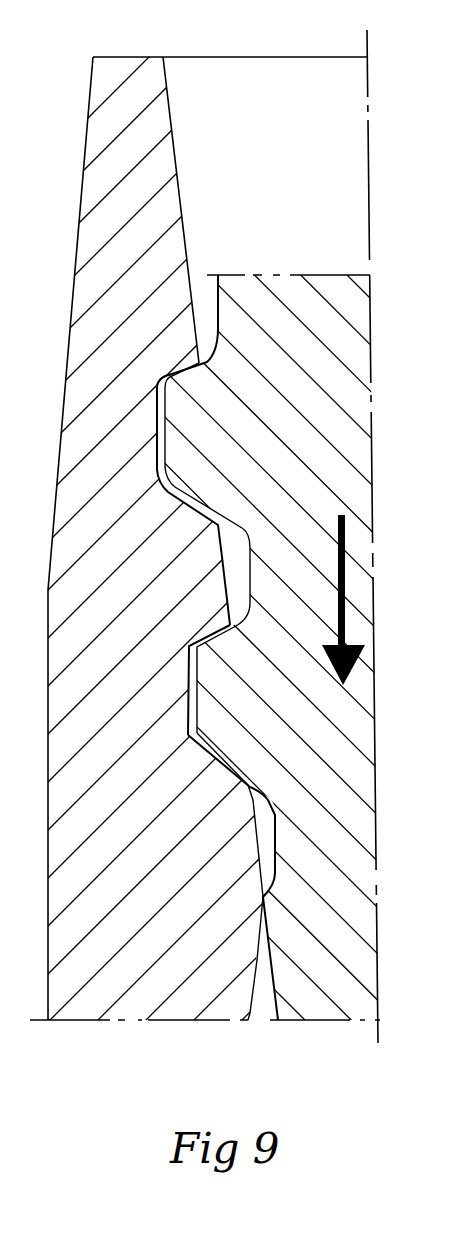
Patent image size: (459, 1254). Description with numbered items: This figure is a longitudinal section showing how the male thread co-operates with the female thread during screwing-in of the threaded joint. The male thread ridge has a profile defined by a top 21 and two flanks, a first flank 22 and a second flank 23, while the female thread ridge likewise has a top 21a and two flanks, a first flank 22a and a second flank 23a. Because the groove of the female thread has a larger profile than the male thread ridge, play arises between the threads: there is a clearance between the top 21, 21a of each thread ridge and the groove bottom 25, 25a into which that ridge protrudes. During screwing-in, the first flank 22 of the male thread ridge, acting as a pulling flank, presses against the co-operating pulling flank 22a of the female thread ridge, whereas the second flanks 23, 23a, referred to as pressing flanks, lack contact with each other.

The top 21 is at (160, 402).
The top 21a is at (225, 564).
The first flank 22 is at (222, 633).
The first flank 22a is at (201, 645).
The second flank 23 is at (237, 768).
The second flank 23a is at (210, 764).
The bottom 25 is at (245, 552).
The bottom 25a is at (155, 442).